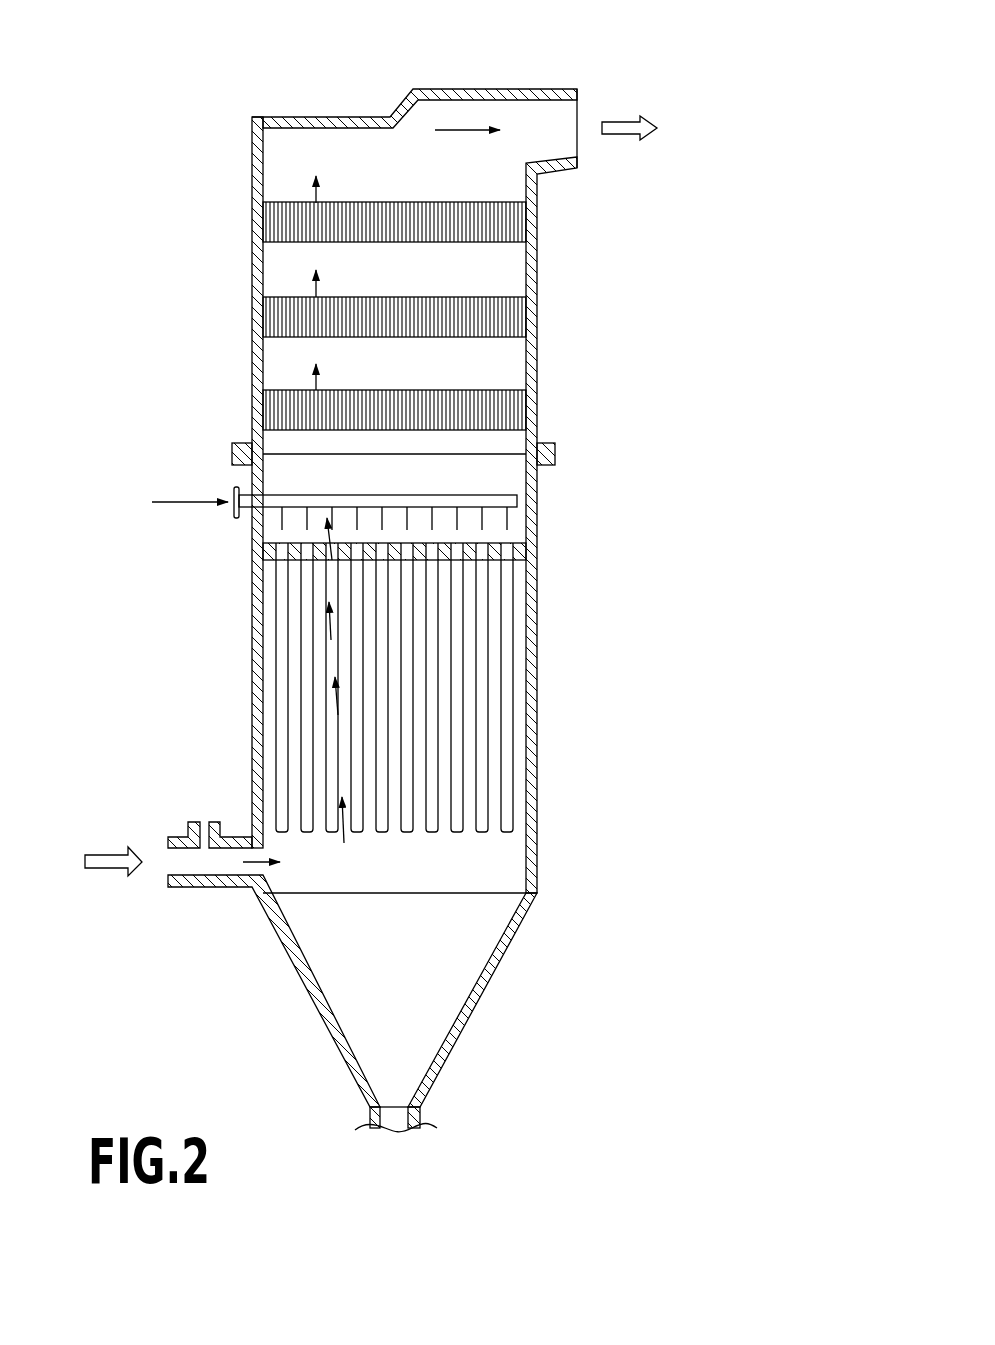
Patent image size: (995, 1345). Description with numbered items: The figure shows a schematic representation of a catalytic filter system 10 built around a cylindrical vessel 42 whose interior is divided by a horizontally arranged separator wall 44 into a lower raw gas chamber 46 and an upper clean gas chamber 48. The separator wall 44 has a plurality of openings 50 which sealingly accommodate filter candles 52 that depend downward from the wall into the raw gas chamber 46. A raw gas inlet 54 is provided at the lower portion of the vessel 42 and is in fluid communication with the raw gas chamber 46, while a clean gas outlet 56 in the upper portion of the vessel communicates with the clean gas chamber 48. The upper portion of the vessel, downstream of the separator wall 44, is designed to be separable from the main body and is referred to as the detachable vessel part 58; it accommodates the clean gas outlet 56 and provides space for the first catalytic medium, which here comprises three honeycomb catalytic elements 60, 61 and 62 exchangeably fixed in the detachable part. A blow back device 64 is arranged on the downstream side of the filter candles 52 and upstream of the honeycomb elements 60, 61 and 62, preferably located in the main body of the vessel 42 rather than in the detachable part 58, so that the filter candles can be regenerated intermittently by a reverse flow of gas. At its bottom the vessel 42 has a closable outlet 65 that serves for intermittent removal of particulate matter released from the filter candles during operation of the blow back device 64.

The filter apparatus 10 is at (648, 292).
The cylindrical vessel 42 is at (550, 617).
The separator wall 44 is at (540, 543).
The raw gas chamber 46 is at (470, 865).
The clean gas chamber 48 is at (487, 483).
The openings 50 is at (300, 537).
The filter candles 52 is at (508, 725).
The raw gas inlet 54 is at (213, 902).
The clean gas outlet 56 is at (537, 78).
The detachable vessel part 58 is at (240, 297).
The honeycomb catalytic element 60 is at (287, 412).
The honeycomb catalytic element 61 is at (287, 320).
The honeycomb catalytic element 62 is at (287, 222).
The blow back device 64 is at (245, 512).
The closable outlet 65 is at (420, 1120).